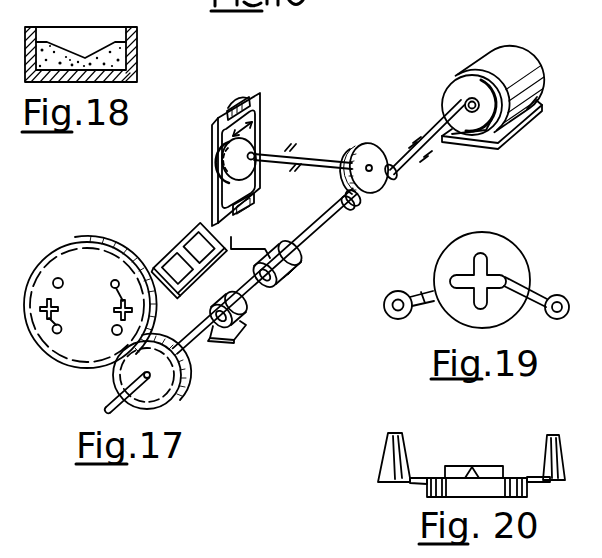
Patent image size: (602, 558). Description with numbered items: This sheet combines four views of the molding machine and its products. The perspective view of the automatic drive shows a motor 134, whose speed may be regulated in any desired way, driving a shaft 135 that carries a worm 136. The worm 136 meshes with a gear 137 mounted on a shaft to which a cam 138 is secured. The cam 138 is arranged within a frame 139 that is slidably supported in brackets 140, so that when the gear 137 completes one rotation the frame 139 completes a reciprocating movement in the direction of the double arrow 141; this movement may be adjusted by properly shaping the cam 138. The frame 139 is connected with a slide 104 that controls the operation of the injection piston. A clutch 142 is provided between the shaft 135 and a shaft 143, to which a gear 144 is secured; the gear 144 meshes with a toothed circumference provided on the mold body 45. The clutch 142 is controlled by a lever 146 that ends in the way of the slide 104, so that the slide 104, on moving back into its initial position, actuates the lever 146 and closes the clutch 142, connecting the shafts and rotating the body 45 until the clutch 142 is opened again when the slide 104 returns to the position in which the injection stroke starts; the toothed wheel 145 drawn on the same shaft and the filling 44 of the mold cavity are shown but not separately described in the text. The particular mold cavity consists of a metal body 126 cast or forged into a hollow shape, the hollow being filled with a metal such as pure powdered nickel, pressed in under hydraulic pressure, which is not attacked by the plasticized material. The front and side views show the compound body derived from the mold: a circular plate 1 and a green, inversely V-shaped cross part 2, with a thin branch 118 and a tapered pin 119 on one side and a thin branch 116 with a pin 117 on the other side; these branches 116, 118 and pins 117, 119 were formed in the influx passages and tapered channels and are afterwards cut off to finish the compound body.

In FIG. 18, the abrasive material in trough 44 is at (92, 57).
In FIG. 18, the body 126 is at (133, 38).
In FIG. 17, the motor 134 is at (517, 52).
In FIG. 17, the shaft 135 is at (434, 143).
In FIG. 17, the worm 136 is at (382, 190).
In FIG. 17, the gear 137 is at (368, 144).
In FIG. 17, the cam 138 is at (225, 166).
In FIG. 17, the frame 139 is at (263, 121).
In FIG. 17, the brackets 140 is at (232, 104).
In FIG. 17, the double arrow 141 is at (226, 124).
In FIG. 17, the clutch 142 is at (298, 266).
In FIG. 17, the shaft 143 is at (201, 344).
In FIG. 17, the gear 144 is at (182, 388).
In FIG. 17, the gear 145 is at (88, 366).
In FIG. 17, the body 45 is at (62, 258).
In FIG. 17, the slide 104 is at (182, 243).
In FIG. 17, the lever 146 is at (262, 250).
In FIG. 19, the circular plate 1 is at (518, 276).
In FIG. 20, the circular plate 1 is at (437, 478).
In FIG. 19, the cross part 2 is at (484, 269).
In FIG. 20, the cross part 2 is at (477, 469).
In FIG. 20, the branch 116 is at (543, 480).
In FIG. 19, the pin 117 is at (563, 314).
In FIG. 20, the pin 117 is at (559, 452).
In FIG. 19, the branch 118 is at (424, 296).
In FIG. 20, the branch 118 is at (415, 482).
In FIG. 19, the pin 119 is at (394, 314).
In FIG. 20, the pin 119 is at (388, 451).